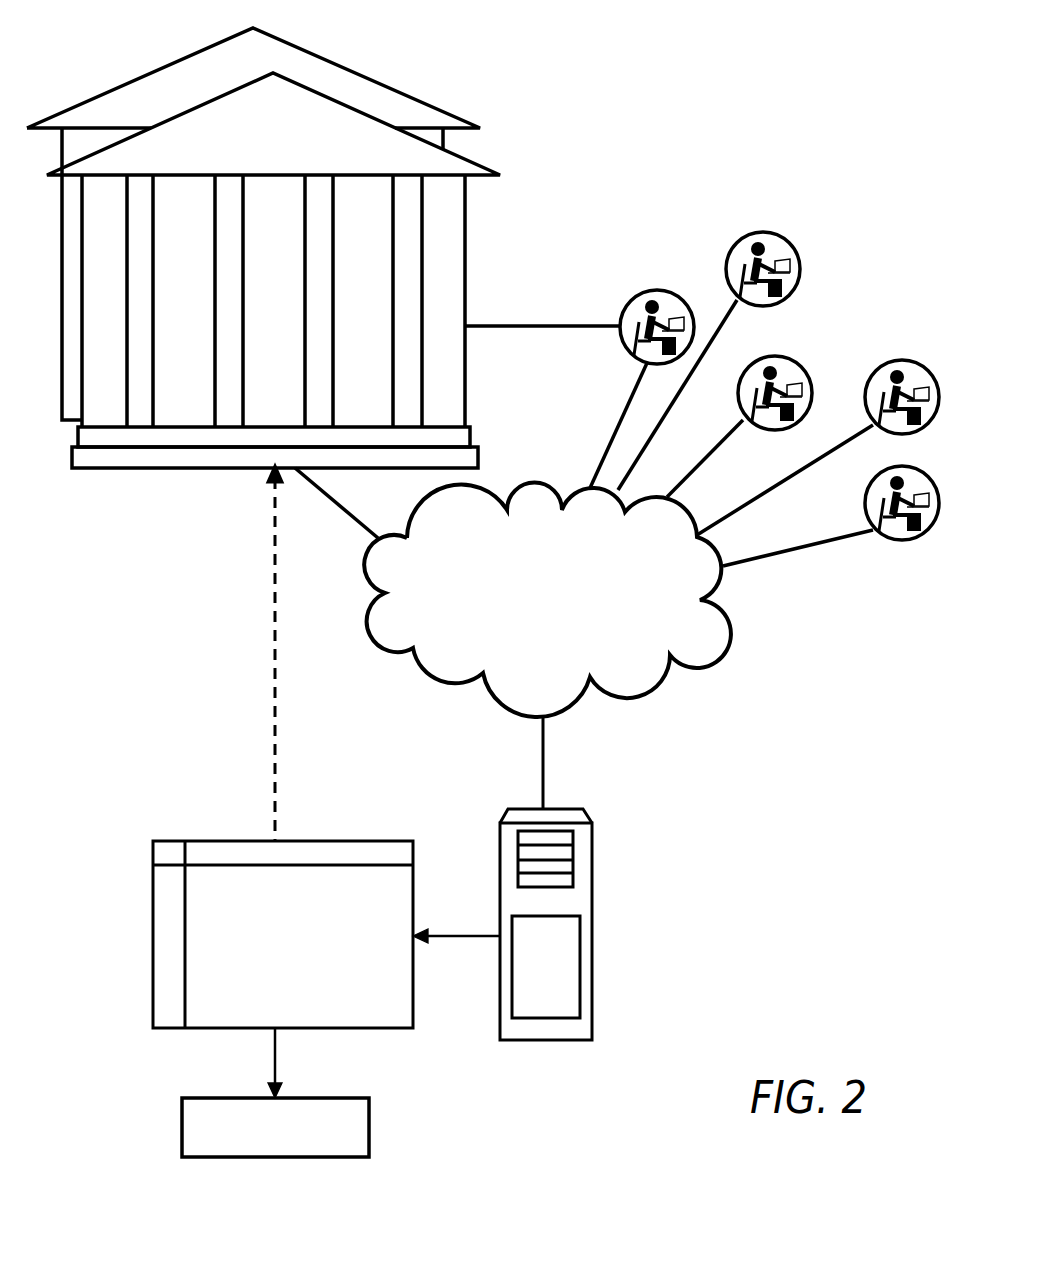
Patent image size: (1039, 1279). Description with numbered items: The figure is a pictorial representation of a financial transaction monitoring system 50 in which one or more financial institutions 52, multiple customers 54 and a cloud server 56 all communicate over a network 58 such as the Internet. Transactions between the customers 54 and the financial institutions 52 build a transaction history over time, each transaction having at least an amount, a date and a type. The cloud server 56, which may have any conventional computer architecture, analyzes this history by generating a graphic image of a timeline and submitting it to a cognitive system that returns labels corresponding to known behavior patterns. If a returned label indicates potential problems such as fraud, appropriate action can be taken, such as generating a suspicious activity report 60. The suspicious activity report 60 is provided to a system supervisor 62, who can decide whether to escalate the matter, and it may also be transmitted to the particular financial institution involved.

The financial transaction monitoring system 50 is at (678, 88).
The financial institutions 52 is at (186, 52).
The customers 54 is at (726, 263).
The cloud server 56 is at (516, 808).
The network 58 is at (405, 652).
The suspicious activity report 60 is at (380, 1028).
The system supervisor 62 is at (315, 1157).